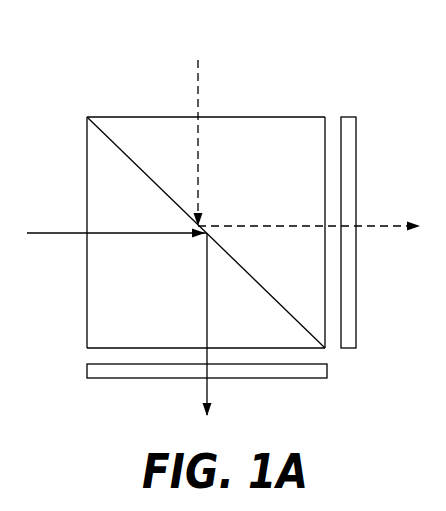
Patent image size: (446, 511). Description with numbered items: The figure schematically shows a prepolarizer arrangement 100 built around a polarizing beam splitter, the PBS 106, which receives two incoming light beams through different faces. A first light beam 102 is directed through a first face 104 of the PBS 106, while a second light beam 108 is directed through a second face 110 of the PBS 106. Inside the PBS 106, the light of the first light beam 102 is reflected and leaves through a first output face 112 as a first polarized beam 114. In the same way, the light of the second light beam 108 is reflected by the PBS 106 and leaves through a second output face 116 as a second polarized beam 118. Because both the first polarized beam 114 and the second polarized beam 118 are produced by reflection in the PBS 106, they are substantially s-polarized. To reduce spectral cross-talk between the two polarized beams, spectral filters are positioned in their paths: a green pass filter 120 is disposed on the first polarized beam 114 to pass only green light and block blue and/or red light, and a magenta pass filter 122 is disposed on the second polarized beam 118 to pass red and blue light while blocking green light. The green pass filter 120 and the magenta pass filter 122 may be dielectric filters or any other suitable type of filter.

The prepolarizer arrangement 100 is at (82, 80).
The first light beam 102 is at (55, 232).
The first face 104 is at (86, 157).
The PBS 106 is at (286, 117).
The second light beam 108 is at (199, 80).
The second face 110 is at (124, 117).
The first output face 112 is at (100, 350).
The first polarized beam 114 is at (205, 386).
The second output face 116 is at (332, 347).
The second polarized beam 118 is at (373, 229).
The green pass filter 120 is at (113, 380).
The magenta pass filter 122 is at (356, 130).